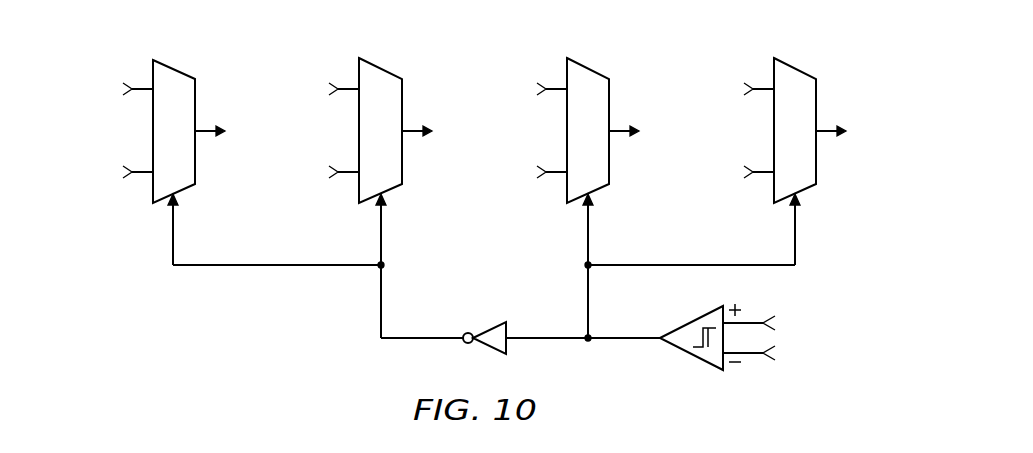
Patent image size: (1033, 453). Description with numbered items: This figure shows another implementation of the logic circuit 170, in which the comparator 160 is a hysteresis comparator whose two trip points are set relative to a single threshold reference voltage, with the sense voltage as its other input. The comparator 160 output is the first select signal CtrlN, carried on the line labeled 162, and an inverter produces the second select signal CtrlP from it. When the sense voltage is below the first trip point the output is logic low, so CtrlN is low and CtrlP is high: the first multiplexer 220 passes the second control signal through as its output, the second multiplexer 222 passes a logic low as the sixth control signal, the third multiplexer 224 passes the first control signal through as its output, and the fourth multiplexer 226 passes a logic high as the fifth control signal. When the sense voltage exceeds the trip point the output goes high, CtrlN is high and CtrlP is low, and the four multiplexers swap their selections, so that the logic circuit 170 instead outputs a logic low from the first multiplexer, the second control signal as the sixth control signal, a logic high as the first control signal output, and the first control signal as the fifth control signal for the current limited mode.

The third multiplexer 224 is at (167, 60).
The fourth multiplexer 226 is at (374, 58).
The first multiplexer 220 is at (582, 58).
The second multiplexer 222 is at (789, 58).
The logic circuit 170 is at (251, 321).
The control signal CTRLN 162 is at (607, 340).
The comparator 160 is at (698, 357).